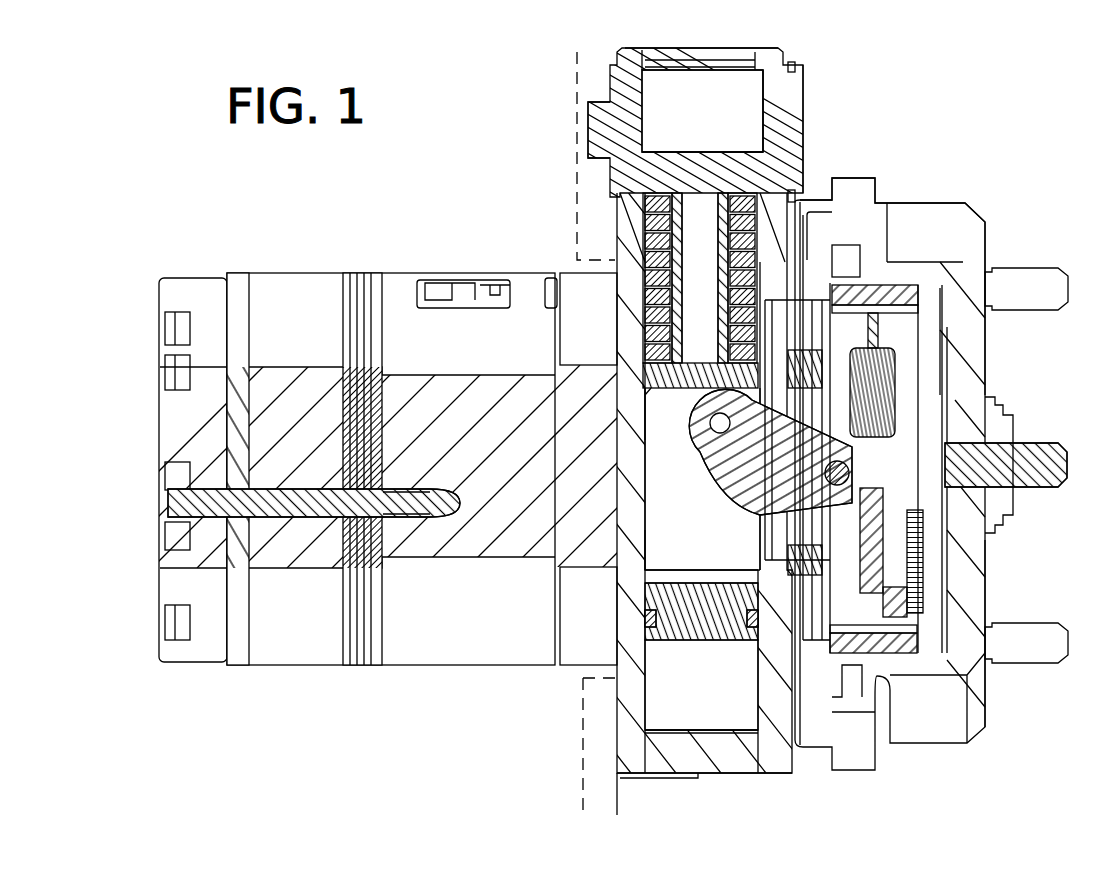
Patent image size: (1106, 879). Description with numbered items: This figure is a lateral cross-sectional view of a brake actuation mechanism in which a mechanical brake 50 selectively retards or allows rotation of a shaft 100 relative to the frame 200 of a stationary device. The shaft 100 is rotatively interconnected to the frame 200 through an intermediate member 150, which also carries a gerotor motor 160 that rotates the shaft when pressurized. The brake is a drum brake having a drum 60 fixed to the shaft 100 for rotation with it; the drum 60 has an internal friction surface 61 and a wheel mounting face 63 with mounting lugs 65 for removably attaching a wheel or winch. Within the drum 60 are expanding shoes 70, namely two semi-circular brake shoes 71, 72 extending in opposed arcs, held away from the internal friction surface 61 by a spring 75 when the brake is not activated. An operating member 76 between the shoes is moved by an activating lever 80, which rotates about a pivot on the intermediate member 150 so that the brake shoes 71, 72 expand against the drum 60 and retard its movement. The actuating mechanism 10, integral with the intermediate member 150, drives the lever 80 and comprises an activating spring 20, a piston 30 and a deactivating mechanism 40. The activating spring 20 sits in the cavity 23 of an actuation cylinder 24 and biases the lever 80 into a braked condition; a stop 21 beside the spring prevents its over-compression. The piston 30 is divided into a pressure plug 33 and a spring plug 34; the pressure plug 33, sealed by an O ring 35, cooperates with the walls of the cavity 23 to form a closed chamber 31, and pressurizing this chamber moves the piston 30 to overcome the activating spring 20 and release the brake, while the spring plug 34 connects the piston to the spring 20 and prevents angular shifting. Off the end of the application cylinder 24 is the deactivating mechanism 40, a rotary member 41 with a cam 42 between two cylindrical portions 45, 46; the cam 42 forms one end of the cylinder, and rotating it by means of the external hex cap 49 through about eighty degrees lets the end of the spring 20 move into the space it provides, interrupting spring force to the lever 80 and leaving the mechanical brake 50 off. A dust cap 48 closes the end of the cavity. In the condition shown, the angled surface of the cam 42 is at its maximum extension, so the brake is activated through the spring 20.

The actuating mechanism 10 is at (706, 526).
The activating spring 20 is at (724, 232).
The stop 21 is at (724, 274).
The cavity 23 is at (647, 408).
The actuation cylinder 24 is at (650, 553).
The piston 30 is at (695, 636).
The closed chamber 31 is at (706, 716).
The pressure plug 33 is at (717, 640).
The spring plug 34 is at (700, 366).
The O ring 35 is at (645, 620).
The deactivating mechanism 40 is at (690, 105).
The rotary member 41 is at (790, 105).
The cam 42 is at (712, 166).
The cylindrical portion 45 is at (605, 100).
The cylindrical portion 46 is at (790, 148).
The dust cap 48 is at (740, 68).
The hex cap 49 is at (605, 138).
The mechanical brake 50 is at (988, 742).
The drum 60 is at (935, 215).
The internal friction surface 61 is at (905, 655).
The wheel mounting face 63 is at (990, 603).
The mounting lugs 65 is at (1041, 657).
The expanding shoes 70 is at (920, 298).
The brake shoe 71 is at (880, 295).
The brake shoe 72 is at (868, 653).
The spring 75 is at (920, 552).
The operating member 76 is at (888, 380).
The activating lever 80 is at (705, 466).
The shaft 100 is at (1000, 401).
The intermediate member 150 is at (725, 781).
The gerotor motor 160 is at (278, 263).
The frame 200 is at (580, 222).